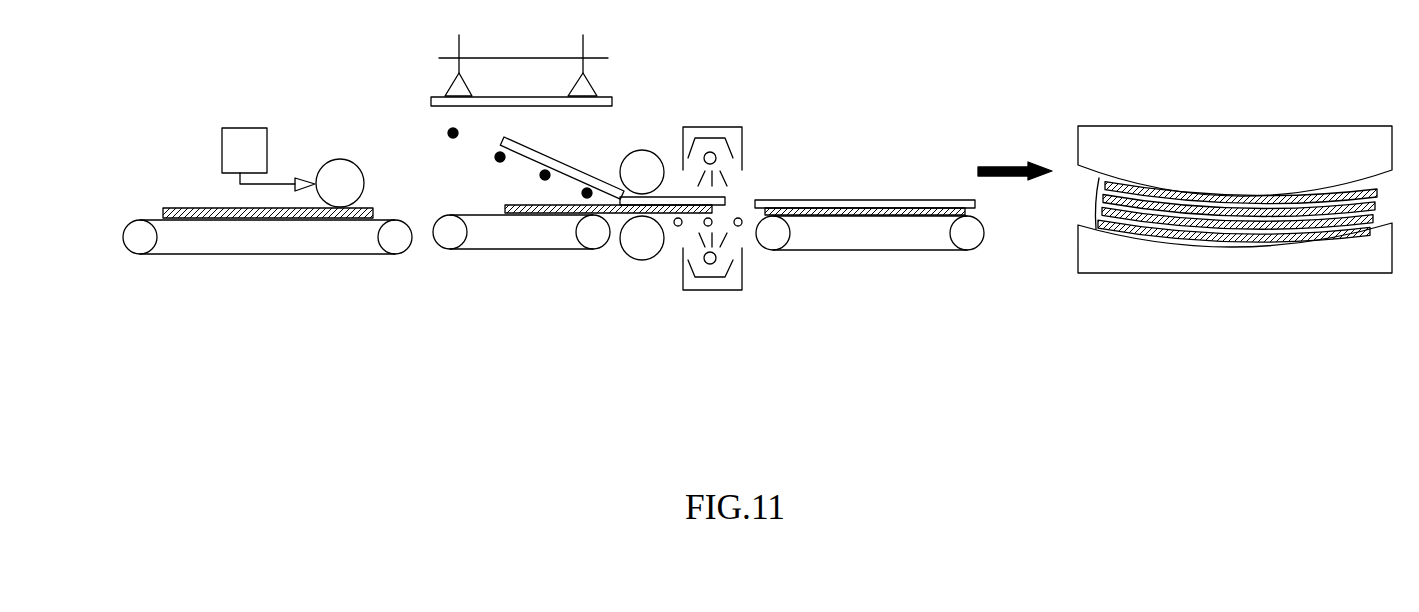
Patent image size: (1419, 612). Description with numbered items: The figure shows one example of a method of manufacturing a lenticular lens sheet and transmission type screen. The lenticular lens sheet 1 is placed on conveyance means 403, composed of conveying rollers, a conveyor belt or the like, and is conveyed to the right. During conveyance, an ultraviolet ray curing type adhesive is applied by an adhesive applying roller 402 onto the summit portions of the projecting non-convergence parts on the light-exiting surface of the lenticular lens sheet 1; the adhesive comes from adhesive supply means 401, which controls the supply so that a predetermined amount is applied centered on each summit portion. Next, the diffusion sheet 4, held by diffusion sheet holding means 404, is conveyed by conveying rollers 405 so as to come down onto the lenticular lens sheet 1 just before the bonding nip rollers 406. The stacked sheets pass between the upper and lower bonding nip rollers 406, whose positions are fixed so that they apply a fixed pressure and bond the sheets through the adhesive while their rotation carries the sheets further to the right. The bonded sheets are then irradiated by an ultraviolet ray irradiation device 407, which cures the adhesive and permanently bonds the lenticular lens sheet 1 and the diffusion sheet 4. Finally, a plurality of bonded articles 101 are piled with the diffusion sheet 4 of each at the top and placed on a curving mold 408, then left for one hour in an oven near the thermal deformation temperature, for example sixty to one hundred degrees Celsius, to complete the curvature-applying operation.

The lenticular lens sheet 1 is at (272, 221).
The diffusion sheet 4 is at (578, 168).
The bonded article 101 is at (1092, 185).
The adhesive supply means 401 is at (222, 133).
The adhesive applying roller 402 is at (333, 158).
The conveyance means 403 is at (328, 257).
The diffusion sheet holding means 404 is at (505, 57).
The conveying rollers 405 is at (447, 133).
The bonding nip rollers 406 is at (628, 188).
The ultraviolet ray irradiation device 407 is at (722, 124).
The curving mold 408 is at (1195, 260).